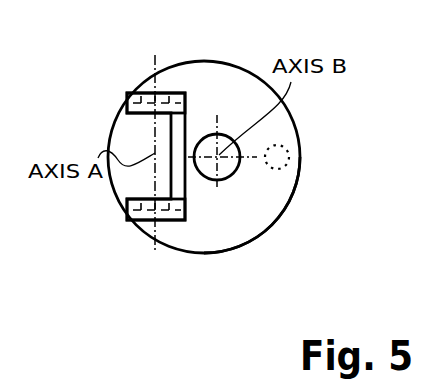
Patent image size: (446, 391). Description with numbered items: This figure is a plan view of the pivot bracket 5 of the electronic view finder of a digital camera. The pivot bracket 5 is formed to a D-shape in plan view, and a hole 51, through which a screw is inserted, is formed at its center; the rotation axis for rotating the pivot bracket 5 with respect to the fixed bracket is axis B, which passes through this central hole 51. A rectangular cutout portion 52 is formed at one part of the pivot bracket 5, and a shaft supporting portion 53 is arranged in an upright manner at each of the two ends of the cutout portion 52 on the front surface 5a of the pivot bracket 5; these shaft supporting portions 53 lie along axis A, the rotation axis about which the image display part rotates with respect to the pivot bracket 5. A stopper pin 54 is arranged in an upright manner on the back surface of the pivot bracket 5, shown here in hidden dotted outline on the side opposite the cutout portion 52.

The pivot bracket 5 is at (282, 127).
The front surface 5a is at (234, 223).
The hole 51 is at (200, 135).
The cutout portion 52 is at (137, 183).
The shaft supporting portion 53 is at (132, 92).
The stopper pin 54 is at (291, 158).